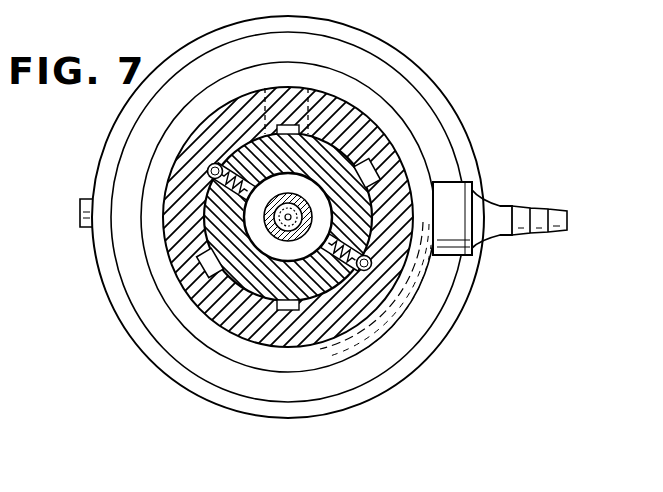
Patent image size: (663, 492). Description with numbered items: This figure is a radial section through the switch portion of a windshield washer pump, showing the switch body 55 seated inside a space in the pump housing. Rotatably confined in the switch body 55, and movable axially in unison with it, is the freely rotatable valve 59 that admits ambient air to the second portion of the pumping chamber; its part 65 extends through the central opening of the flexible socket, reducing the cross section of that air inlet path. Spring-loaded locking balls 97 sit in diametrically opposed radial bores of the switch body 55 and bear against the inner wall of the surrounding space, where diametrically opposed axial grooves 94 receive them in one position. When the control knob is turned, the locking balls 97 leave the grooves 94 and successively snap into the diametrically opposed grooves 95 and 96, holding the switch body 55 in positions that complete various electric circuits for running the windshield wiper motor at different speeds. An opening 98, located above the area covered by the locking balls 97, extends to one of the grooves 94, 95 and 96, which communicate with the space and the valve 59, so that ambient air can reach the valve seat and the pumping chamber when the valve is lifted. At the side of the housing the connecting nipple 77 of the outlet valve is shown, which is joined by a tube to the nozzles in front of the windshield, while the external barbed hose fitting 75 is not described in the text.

The switch body 55 is at (222, 221).
The valve 59 is at (310, 210).
The part 65 is at (305, 197).
The hose fitting 75 is at (558, 210).
The connecting nipple 77 is at (84, 214).
The axial grooves 94 is at (208, 167).
The grooves 95 is at (292, 128).
The grooves 96 is at (378, 170).
The locking balls 97 is at (212, 165).
The opening 98 is at (300, 96).